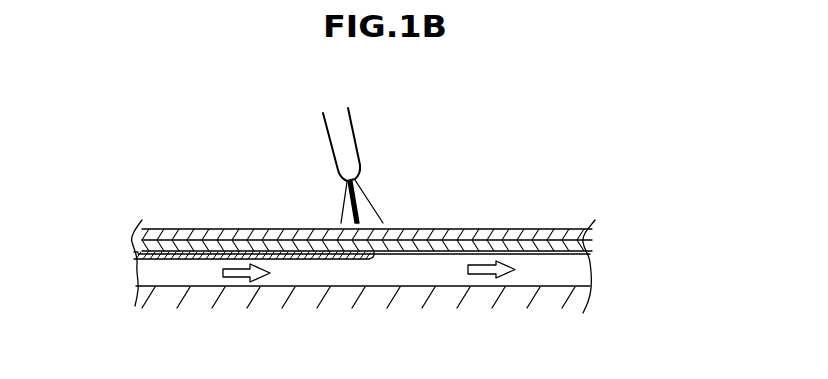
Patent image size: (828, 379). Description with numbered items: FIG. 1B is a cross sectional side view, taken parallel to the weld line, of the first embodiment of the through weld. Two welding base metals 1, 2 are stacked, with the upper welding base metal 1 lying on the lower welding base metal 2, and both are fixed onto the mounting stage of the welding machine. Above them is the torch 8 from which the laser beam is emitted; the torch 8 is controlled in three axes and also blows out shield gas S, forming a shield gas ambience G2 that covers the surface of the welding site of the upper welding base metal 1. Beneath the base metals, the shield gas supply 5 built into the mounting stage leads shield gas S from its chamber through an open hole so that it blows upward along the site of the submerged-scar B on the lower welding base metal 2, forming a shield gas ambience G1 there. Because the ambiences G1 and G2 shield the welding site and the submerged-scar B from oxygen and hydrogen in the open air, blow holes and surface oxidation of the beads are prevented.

The welding base metal 1 is at (583, 237).
The welding base metal 2 is at (583, 245).
The shield gas supply 5 is at (133, 263).
The torch 8 is at (356, 136).
The submerged-scar B is at (319, 261).
The shield gas S is at (240, 278).
The shield gas ambience G1 is at (436, 265).
The shield gas ambience G2 is at (366, 208).